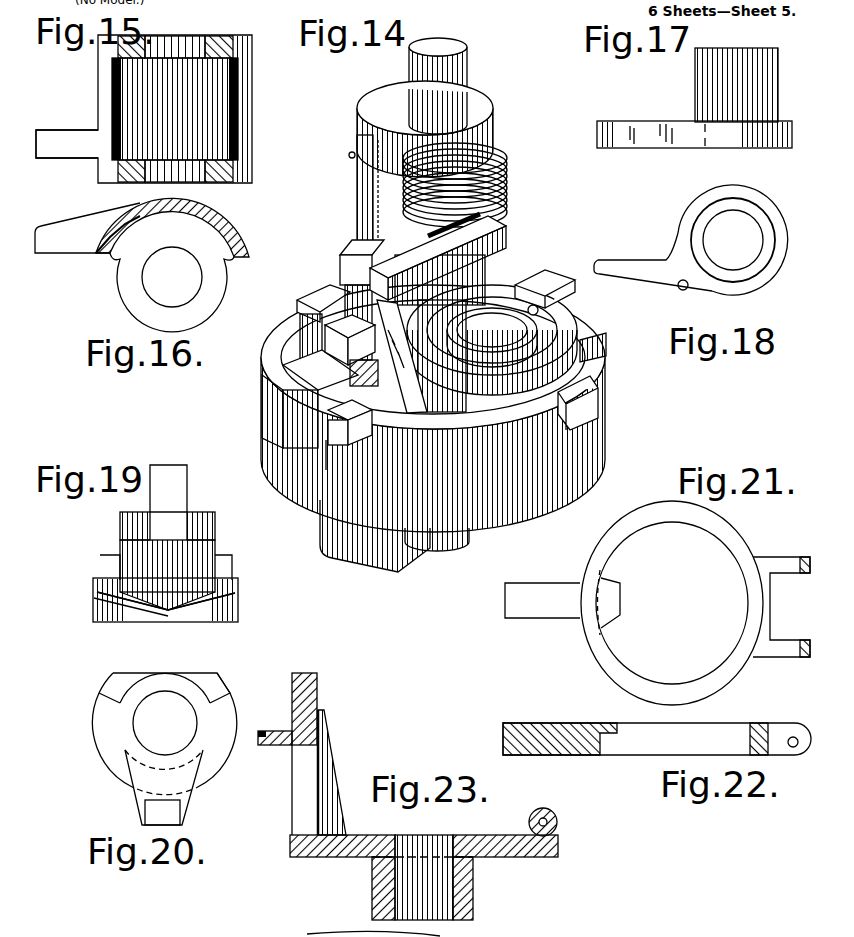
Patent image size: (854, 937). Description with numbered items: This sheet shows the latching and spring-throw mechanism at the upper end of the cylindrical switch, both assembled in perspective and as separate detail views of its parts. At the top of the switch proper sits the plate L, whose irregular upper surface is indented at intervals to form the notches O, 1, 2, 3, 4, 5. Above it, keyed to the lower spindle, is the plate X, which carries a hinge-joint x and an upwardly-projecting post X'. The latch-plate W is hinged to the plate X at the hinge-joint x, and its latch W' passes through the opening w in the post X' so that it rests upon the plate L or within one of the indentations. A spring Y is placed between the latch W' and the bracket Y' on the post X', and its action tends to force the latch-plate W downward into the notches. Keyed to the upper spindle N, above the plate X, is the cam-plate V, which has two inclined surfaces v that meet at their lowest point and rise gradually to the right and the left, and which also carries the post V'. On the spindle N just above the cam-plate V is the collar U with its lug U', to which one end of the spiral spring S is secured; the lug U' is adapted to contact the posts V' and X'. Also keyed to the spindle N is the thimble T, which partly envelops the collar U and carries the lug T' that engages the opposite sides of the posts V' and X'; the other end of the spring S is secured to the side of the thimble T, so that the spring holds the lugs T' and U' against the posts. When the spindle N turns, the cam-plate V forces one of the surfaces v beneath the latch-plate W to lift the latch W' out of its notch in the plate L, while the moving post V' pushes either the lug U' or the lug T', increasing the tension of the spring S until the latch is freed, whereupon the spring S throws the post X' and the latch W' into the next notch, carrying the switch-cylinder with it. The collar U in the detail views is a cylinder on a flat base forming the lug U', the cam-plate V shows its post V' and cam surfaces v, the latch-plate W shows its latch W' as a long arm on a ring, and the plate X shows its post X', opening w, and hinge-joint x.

In FIG. 14, the spindle N is at (408, 69).
In FIG. 15, the thimble T is at (155, 109).
In FIG. 16, the thimble T is at (172, 265).
In FIG. 14, the thimble T is at (411, 165).
In FIG. 15, the lug T' is at (67, 144).
In FIG. 16, the lug T' is at (87, 228).
In FIG. 14, the lug T' is at (353, 250).
In FIG. 14, the spiral spring S is at (503, 181).
In FIG. 17, the collar U is at (753, 85).
In FIG. 18, the collar U is at (744, 240).
In FIG. 14, the collar U is at (449, 255).
In FIG. 17, the lug U' is at (694, 145).
In FIG. 18, the lug U' is at (653, 262).
In FIG. 14, the cam-plate V is at (431, 334).
In FIG. 19, the cam-plate V is at (165, 576).
In FIG. 20, the cam-plate V is at (165, 734).
In FIG. 19, the post V' is at (168, 488).
In FIG. 20, the post V' is at (164, 787).
In FIG. 19, the inclined surfaces v is at (92, 598).
In FIG. 14, the latch-plate W is at (492, 340).
In FIG. 21, the latch-plate W is at (695, 603).
In FIG. 22, the latch-plate W is at (657, 739).
In FIG. 14, the latch W' is at (304, 437).
In FIG. 21, the latch W' is at (542, 600).
In FIG. 23, the plate X is at (424, 885).
In FIG. 23, the post X' is at (303, 694).
In FIG. 14, the spring Y is at (364, 373).
In FIG. 14, the bracket Y' is at (350, 340).
In FIG. 23, the bracket Y' is at (264, 747).
In FIG. 14, the plate L is at (506, 518).
In FIG. 14, the notch O is at (335, 458).
In FIG. 14, the inner ring u is at (478, 364).
In FIG. 23, the opening w is at (299, 805).
In FIG. 14, the hinge-joint x is at (505, 276).
In FIG. 23, the hinge-joint x is at (557, 820).
In FIG. 14, the notch 1 is at (560, 404).
In FIG. 14, the notch 2 is at (606, 344).
In FIG. 14, the notch 3 is at (526, 282).
In FIG. 14, the notch 4 is at (292, 307).
In FIG. 14, the notch 5 is at (262, 398).